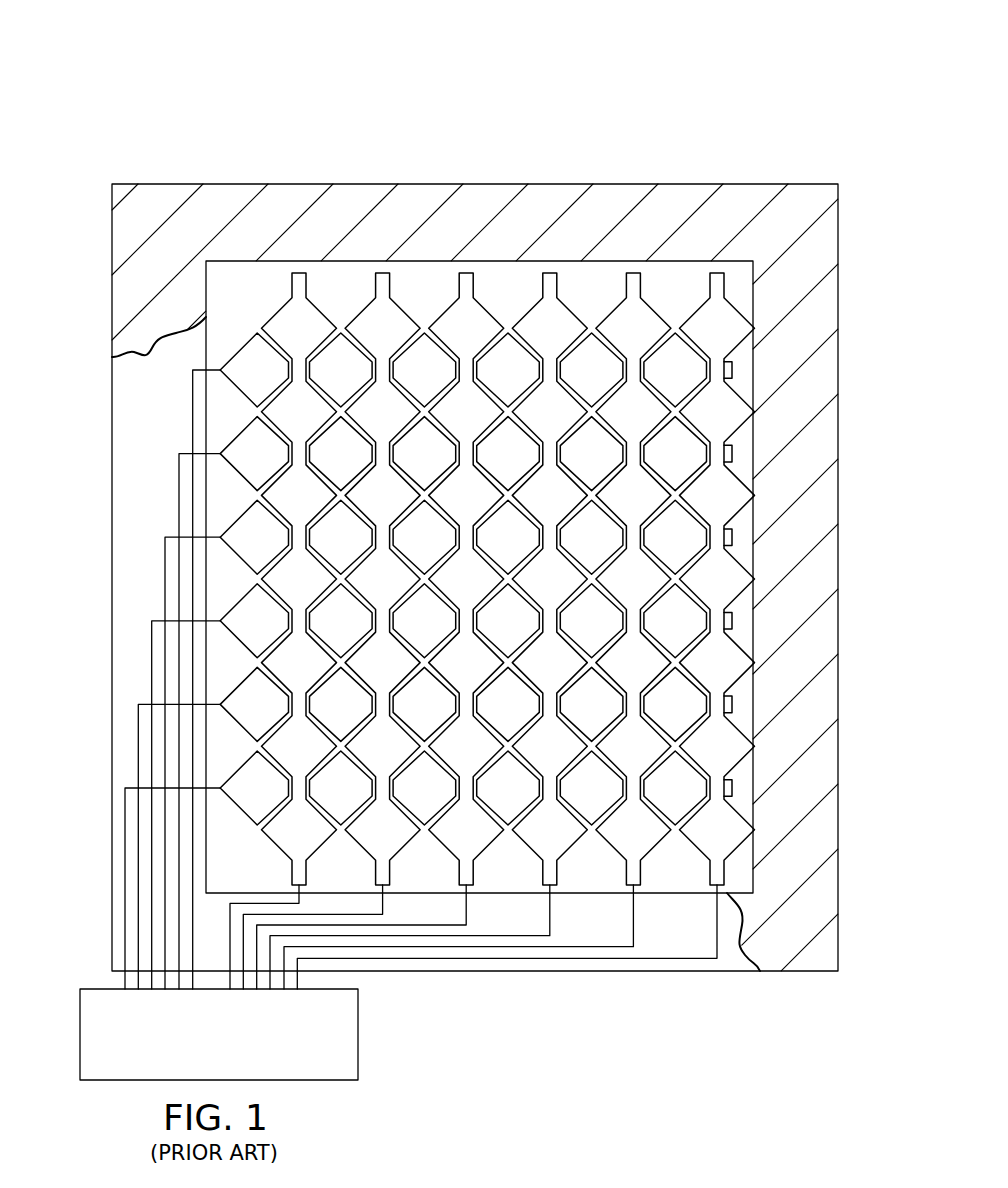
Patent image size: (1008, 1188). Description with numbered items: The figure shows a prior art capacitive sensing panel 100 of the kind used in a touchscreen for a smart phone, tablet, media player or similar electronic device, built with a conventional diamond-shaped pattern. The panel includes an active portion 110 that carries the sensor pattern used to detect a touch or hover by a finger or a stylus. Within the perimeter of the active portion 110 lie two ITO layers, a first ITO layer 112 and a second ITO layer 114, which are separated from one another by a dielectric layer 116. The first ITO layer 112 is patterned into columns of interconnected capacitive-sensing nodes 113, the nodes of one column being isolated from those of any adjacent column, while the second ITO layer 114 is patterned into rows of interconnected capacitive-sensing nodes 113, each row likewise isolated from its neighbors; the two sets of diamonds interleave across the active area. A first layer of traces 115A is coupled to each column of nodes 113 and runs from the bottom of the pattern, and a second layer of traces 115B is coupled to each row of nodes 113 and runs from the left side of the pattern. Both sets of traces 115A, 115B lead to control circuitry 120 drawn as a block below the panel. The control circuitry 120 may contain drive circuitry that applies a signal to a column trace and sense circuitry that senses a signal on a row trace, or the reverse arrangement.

The capacitive sensing panel 100 is at (181, 66).
The active portion 110 is at (753, 640).
The first ITO layer 112 is at (369, 318).
The capacitive-sensing nodes 113 is at (728, 402).
The second ITO layer 114 is at (244, 353).
The first layer of traces 115A is at (520, 958).
The second layer of traces 115B is at (137, 746).
The dielectric layer 116 is at (248, 276).
The control circuitry 120 is at (243, 1050).